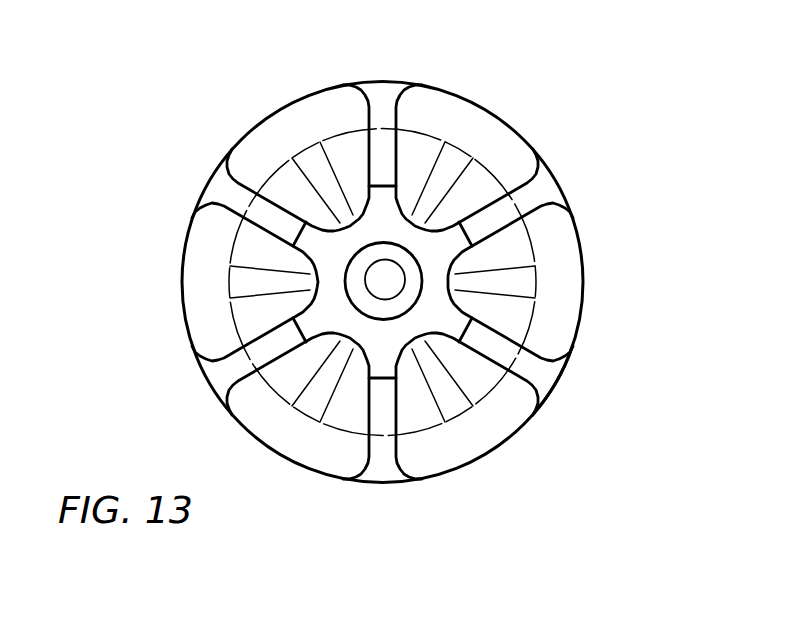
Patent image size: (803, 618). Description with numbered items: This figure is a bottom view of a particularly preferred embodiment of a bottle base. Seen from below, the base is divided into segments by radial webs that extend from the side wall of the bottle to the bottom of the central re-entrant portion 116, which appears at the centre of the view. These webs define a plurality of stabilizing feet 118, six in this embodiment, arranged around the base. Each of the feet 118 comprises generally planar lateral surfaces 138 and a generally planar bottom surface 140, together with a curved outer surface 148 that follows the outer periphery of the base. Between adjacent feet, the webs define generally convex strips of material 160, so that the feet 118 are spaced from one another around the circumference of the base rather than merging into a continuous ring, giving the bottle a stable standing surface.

The central re-entrant portion 116 is at (385, 283).
The stabilizing feet 118 is at (398, 94).
The lateral surfaces 138 is at (523, 247).
The bottom surface 140 is at (530, 283).
The curved outer surface 148 is at (577, 302).
The convex strips of material 160 is at (547, 377).